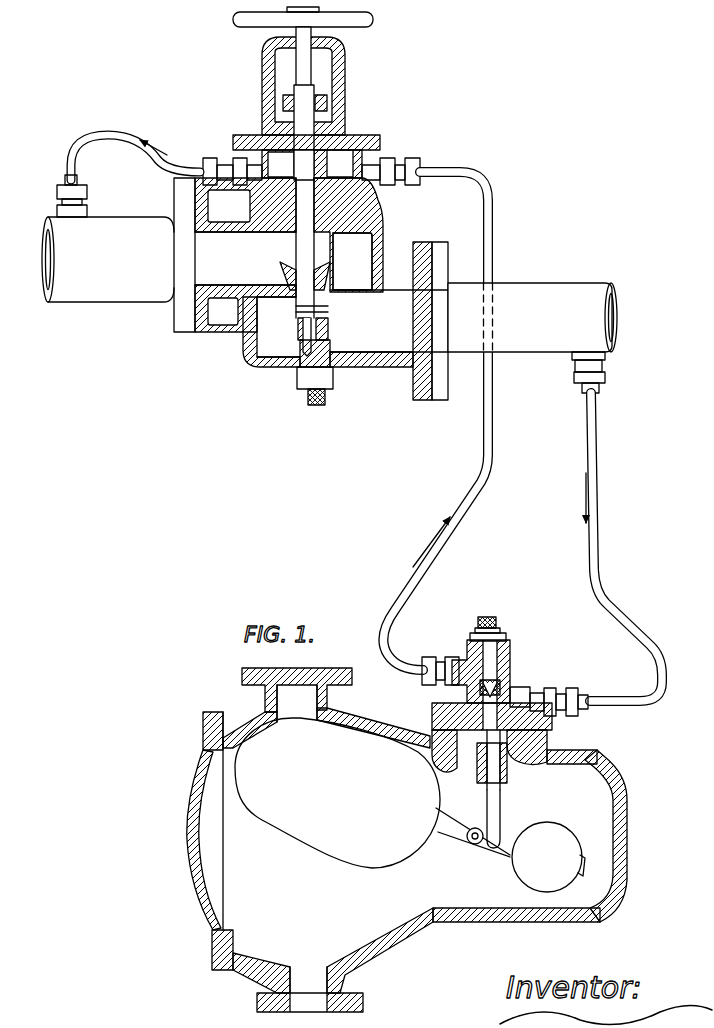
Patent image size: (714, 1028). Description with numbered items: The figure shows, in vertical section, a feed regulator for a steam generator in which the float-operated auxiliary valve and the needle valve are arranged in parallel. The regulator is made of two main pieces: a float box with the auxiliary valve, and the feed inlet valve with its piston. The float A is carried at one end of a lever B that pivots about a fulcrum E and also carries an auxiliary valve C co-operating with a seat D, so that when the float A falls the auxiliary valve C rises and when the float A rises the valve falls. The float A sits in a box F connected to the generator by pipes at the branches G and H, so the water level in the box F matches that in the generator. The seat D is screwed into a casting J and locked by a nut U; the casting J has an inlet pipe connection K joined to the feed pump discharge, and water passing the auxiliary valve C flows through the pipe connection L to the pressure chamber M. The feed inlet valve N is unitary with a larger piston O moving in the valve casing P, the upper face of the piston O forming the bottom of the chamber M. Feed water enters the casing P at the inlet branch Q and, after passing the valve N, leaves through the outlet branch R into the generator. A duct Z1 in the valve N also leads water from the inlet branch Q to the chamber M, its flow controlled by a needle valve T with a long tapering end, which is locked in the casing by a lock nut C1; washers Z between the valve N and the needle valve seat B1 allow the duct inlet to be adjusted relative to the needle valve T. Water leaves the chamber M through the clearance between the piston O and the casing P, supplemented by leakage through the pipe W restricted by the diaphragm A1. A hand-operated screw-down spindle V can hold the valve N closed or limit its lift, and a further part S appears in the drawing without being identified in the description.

The pipe W is at (186, 168).
The restriction diaphragm A1 is at (240, 158).
The hand-operated screw-down spindle V is at (303, 101).
The pressure chamber M is at (375, 171).
The piston O is at (348, 235).
The outlet branch R is at (243, 257).
The feed inlet valve N is at (290, 275).
The duct Z1 is at (312, 275).
The inlet branch Q is at (417, 325).
The washers Z is at (296, 328).
The valve seat S is at (330, 322).
The needle valve seat B1 is at (298, 332).
The needle valve T is at (312, 348).
The valve casing P is at (255, 352).
The lock nut C1 is at (330, 383).
The pipe connection L is at (446, 540).
The casting J is at (470, 658).
The nut U is at (500, 637).
The auxiliary valve seat D is at (503, 678).
The auxiliary valve C is at (500, 705).
The inlet pipe connection K is at (628, 702).
The branch H is at (297, 695).
The float A is at (337, 793).
The lever B is at (447, 832).
The fulcrum E is at (470, 843).
The box F is at (488, 922).
The branch G is at (333, 960).